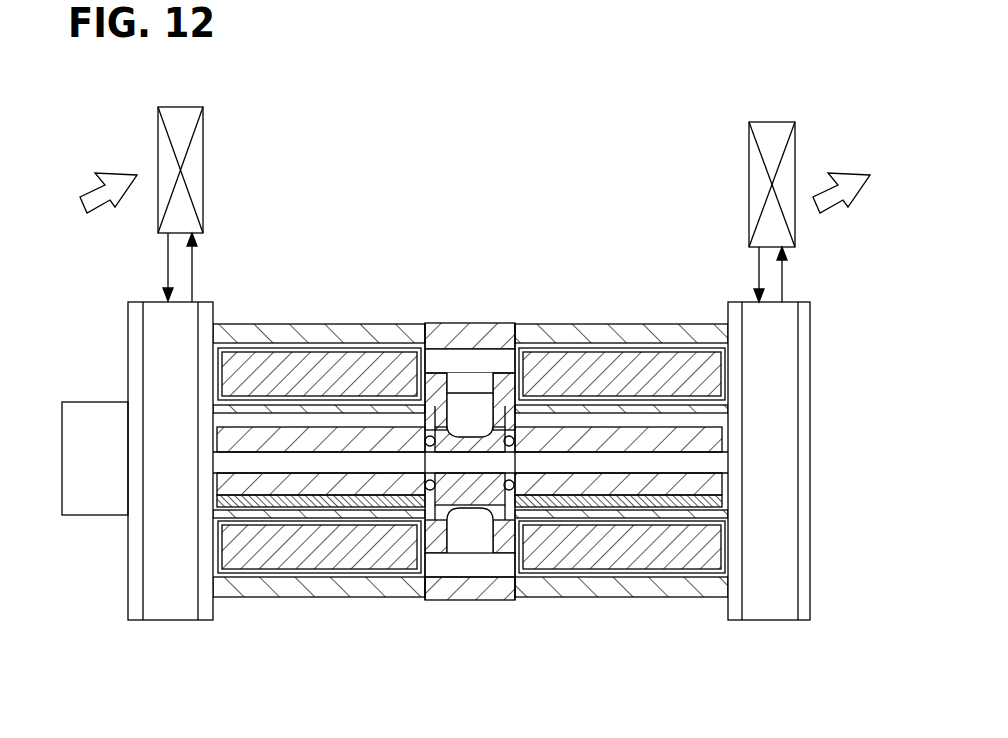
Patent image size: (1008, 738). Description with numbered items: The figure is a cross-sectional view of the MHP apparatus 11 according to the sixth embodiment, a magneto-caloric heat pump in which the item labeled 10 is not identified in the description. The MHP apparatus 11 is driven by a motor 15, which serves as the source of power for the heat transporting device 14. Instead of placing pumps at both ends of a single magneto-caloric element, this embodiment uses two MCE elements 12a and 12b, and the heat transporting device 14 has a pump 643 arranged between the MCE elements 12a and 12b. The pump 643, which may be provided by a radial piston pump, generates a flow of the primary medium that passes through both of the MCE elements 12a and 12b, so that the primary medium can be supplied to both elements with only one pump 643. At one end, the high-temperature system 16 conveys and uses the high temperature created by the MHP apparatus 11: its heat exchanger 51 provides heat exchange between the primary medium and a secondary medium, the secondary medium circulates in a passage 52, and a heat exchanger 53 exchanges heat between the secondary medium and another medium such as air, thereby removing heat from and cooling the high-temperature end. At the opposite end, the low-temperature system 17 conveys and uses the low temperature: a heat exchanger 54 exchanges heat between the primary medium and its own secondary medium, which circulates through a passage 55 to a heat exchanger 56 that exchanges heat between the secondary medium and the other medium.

The rotating electric machine 10 is at (557, 161).
The MHP apparatus 11 is at (467, 173).
The MCE element 12a is at (278, 353).
The MCE element 12b is at (600, 353).
The heat transporting device 14 is at (460, 258).
The motor 15 is at (105, 402).
The high-temperature system 16 is at (721, 156).
The low-temperature system 17 is at (228, 148).
The heat exchanger 51 is at (797, 300).
The passage 52 is at (783, 280).
The heat exchanger 53 is at (795, 155).
The heat exchanger 54 is at (143, 300).
The passage 55 is at (166, 263).
The heat exchanger 56 is at (158, 165).
The pump 643 is at (481, 322).